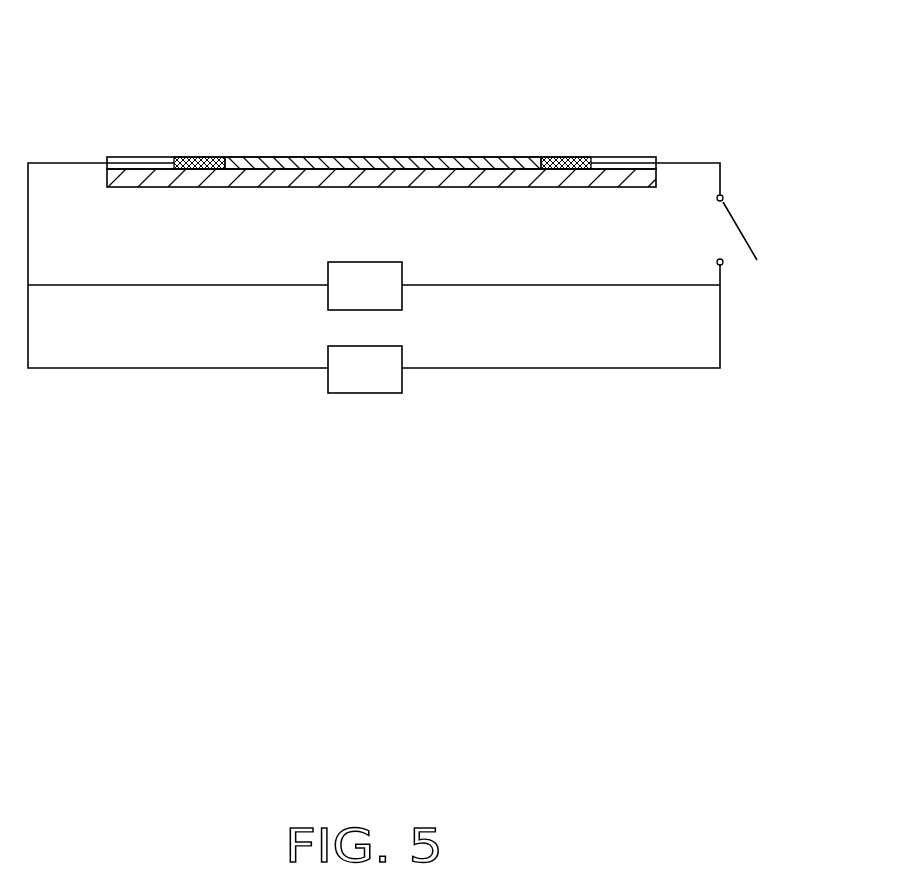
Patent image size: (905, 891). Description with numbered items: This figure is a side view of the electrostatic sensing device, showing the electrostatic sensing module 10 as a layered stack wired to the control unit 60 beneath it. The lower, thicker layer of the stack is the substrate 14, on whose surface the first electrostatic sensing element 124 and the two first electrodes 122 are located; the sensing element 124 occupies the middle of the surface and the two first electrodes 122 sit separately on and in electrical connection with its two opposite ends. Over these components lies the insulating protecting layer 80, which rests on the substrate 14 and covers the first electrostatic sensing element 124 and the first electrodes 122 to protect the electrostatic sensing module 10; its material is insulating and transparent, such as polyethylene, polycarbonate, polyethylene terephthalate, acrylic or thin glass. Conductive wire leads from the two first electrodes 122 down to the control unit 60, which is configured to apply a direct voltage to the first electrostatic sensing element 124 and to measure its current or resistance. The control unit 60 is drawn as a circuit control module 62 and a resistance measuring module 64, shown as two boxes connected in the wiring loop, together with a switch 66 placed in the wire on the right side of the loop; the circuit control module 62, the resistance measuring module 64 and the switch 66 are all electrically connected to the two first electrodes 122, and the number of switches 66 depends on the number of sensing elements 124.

The electrostatic sensing module 10 is at (357, 125).
The substrate 14 is at (163, 178).
The insulating protecting layer 80 is at (143, 157).
The first electrodes 122 is at (563, 157).
The first electrostatic sensing element 124 is at (435, 157).
The control unit 60 is at (420, 398).
The circuit control module 62 is at (389, 273).
The resistance measuring module 64 is at (371, 419).
The switch 66 is at (750, 238).